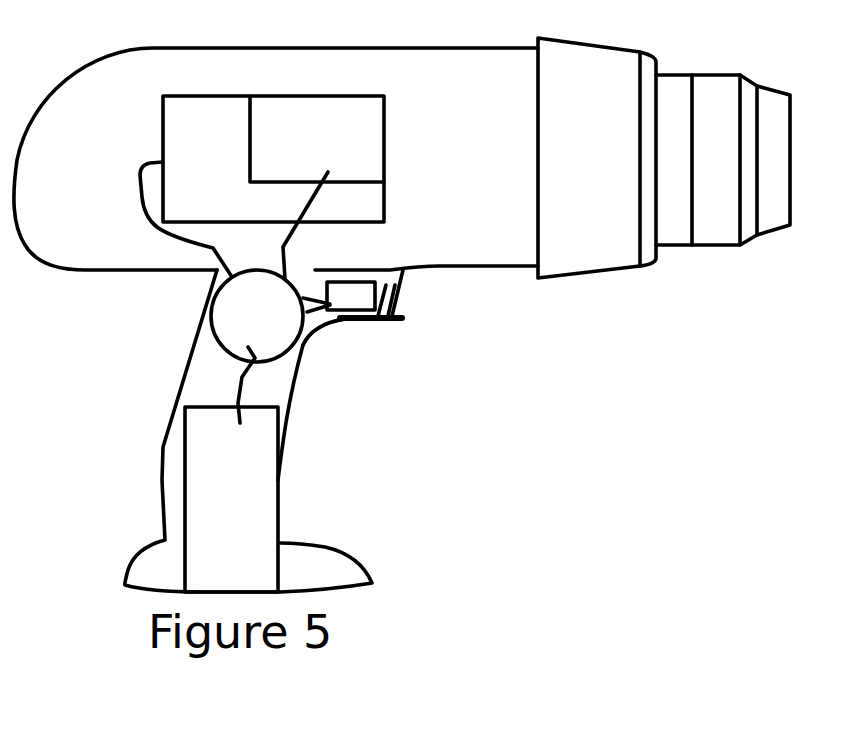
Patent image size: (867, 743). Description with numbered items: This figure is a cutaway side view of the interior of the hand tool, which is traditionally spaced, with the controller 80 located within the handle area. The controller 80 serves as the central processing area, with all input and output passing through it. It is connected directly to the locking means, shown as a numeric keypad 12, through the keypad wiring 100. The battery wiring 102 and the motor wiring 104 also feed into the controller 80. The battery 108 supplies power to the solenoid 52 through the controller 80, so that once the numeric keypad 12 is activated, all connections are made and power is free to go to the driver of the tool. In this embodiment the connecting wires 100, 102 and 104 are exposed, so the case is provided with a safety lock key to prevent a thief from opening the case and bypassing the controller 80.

The numeric keypad 12 is at (347, 130).
The keypad wiring 100 is at (285, 232).
The motor wiring 104 is at (155, 233).
The battery wiring 102 is at (250, 348).
The solenoid 52 is at (402, 288).
The controller 80 is at (344, 353).
The battery 108 is at (263, 503).